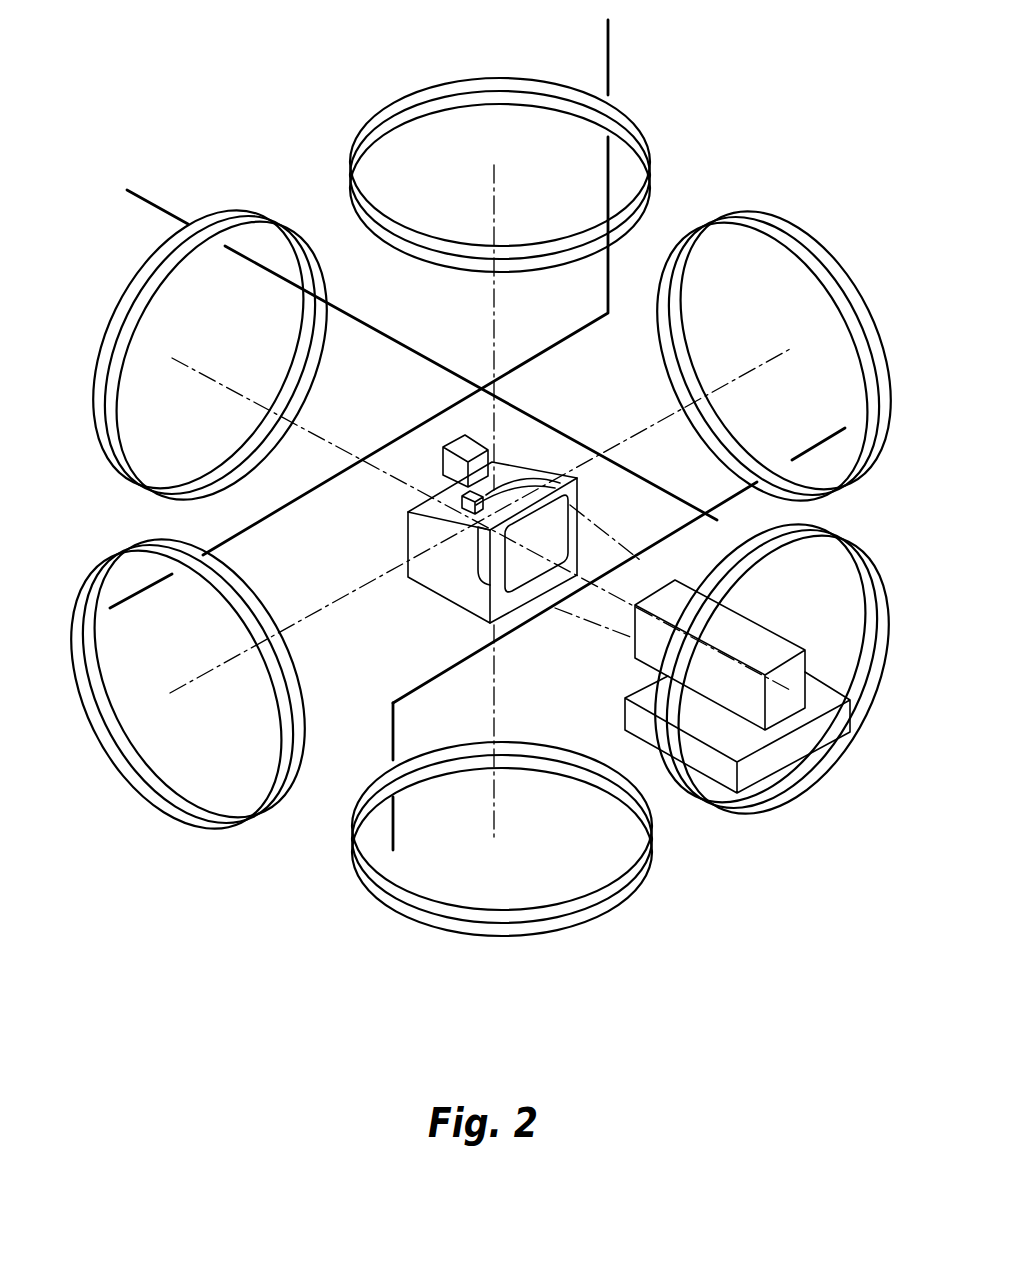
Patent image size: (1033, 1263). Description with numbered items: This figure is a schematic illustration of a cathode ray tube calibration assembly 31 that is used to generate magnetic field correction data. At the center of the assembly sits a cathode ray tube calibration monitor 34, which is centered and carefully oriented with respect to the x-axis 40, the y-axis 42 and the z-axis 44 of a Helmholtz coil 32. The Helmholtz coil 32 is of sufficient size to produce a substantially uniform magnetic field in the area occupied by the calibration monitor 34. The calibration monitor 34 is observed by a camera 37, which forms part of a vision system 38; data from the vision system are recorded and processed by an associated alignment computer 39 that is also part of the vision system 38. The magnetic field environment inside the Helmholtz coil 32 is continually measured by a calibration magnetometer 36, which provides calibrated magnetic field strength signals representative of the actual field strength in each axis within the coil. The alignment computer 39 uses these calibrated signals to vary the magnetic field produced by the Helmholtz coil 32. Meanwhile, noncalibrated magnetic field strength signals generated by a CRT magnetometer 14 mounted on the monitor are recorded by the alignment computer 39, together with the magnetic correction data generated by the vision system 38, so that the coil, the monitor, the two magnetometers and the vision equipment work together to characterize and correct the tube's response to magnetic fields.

The CRT magnetometer 14 is at (495, 497).
The cathode ray tube calibration assembly 31 is at (273, 873).
The Helmholtz coil 32 is at (735, 192).
The cathode ray tube calibration monitor 34 is at (448, 578).
The calibration magnetometer 36 is at (462, 447).
The camera 37 is at (827, 642).
The vision system 38 is at (693, 737).
The alignment computer 39 is at (767, 753).
The x-axis 40 is at (195, 380).
The y-axis 42 is at (220, 662).
The z-axis 44 is at (500, 808).